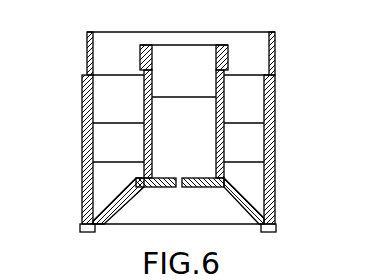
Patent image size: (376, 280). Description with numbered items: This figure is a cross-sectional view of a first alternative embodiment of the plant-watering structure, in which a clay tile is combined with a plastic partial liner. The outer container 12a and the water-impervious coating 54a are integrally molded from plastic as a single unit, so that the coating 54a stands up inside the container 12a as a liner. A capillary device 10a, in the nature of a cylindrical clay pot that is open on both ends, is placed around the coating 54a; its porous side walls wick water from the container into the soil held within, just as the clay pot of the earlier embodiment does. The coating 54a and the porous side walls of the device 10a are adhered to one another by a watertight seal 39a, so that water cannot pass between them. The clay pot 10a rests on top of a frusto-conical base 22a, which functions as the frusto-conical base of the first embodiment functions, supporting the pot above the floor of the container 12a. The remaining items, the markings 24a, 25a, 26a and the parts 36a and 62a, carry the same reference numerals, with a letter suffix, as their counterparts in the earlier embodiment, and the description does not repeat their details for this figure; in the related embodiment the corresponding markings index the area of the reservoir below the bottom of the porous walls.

The capillary device 10a is at (227, 54).
The outer container 12a is at (275, 152).
The frusto-conical base 22a is at (243, 203).
The outer wall 24a is at (82, 149).
The inner wall surface 25a is at (128, 192).
The base 26a is at (82, 191).
The drain opening 36a is at (182, 189).
The watertight seal 39a is at (224, 139).
The water-impervious coating 54a is at (152, 108).
The upper rim 62a is at (275, 62).